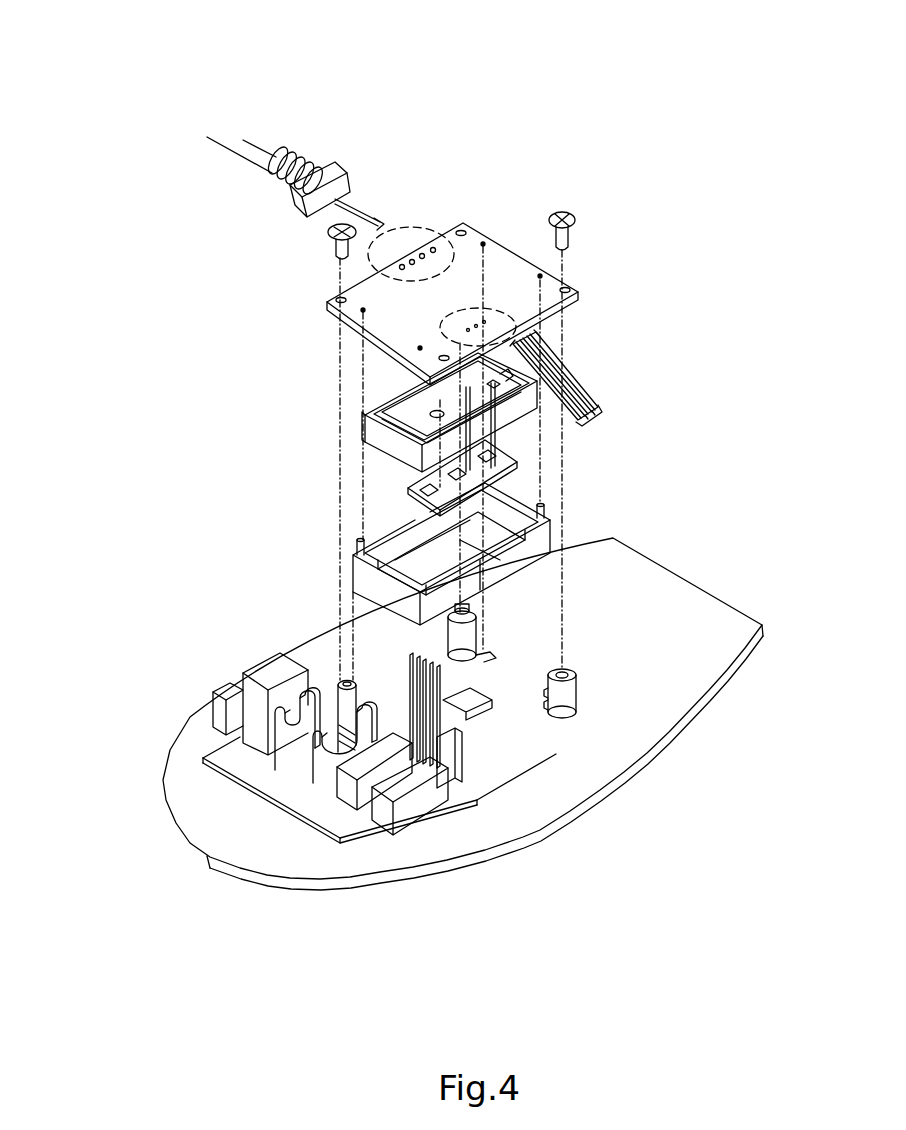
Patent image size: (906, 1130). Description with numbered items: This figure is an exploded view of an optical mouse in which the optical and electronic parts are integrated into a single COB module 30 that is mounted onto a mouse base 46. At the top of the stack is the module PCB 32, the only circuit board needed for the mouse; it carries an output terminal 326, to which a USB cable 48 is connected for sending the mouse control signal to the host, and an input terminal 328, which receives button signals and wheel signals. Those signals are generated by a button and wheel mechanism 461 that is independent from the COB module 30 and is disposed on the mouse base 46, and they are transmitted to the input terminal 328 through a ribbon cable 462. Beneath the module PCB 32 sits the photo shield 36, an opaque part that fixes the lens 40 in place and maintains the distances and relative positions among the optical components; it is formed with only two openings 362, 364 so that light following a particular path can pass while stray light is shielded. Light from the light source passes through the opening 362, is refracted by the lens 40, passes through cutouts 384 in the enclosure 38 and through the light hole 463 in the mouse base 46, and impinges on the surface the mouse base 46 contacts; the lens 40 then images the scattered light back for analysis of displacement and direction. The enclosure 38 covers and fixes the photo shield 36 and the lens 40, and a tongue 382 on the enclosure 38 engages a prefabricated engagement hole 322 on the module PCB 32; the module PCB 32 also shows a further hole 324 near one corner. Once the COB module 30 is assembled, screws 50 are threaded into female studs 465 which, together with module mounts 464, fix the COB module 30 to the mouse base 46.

The COB module 30 is at (693, 87).
The module PCB 32 is at (480, 259).
The engagement hole 322 is at (540, 270).
The corner hole 324 is at (580, 292).
The output terminal 326 is at (430, 228).
The input terminal 328 is at (483, 242).
The photo shield 36 is at (399, 421).
The opening 362 is at (555, 355).
The opening 364 is at (430, 415).
The enclosure 38 is at (516, 554).
The tongue 382 is at (546, 514).
The cutout 384 is at (373, 540).
The lens 40 is at (517, 462).
The mouse base 46 is at (257, 875).
The button and wheel mechanism 461 is at (232, 733).
The ribbon cable 462 is at (598, 385).
The light hole 463 is at (488, 703).
The module mount 464 is at (495, 655).
The female stud 465 is at (580, 700).
The USB cable 48 is at (253, 143).
The screw 50 is at (573, 216).